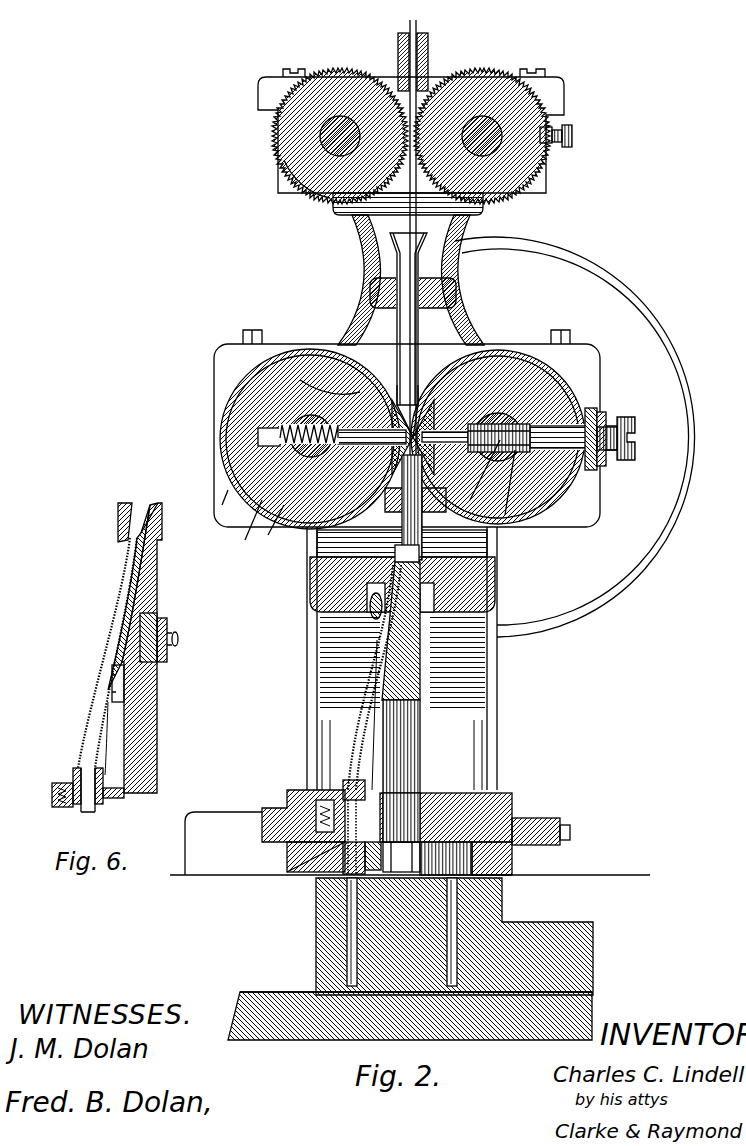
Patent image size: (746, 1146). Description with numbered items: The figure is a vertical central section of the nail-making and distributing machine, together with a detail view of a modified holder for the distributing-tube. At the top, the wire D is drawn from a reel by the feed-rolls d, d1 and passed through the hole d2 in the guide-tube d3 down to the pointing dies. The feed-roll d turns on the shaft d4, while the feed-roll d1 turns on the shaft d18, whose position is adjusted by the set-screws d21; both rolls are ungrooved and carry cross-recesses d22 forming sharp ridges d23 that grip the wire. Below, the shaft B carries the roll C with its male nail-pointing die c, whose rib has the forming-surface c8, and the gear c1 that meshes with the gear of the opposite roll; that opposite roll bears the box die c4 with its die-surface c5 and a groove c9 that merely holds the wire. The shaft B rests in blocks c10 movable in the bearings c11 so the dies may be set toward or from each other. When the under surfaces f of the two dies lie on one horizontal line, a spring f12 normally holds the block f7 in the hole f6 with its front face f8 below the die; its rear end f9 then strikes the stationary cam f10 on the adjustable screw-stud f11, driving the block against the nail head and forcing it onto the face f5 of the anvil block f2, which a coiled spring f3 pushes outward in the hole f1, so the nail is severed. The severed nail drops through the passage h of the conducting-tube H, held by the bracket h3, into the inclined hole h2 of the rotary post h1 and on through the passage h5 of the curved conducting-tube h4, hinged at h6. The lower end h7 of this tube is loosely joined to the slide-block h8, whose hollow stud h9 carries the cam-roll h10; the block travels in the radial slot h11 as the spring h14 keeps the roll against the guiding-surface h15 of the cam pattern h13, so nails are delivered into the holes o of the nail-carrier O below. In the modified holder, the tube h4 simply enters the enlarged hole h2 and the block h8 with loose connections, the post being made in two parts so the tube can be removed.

In FIG. 2, the feed-roll d is at (347, 70).
In FIG. 2, the feed-roll d1 is at (488, 78).
In FIG. 2, the hole d2 is at (418, 262).
In FIG. 2, the guide-tube d3 is at (440, 292).
In FIG. 2, the shaft d4 is at (322, 134).
In FIG. 2, the shaft d18 is at (550, 133).
In FIG. 2, the set-screws d21 is at (575, 140).
In FIG. 2, the cross-recesses d22 is at (280, 170).
In FIG. 2, the sharp ridges d23 is at (338, 70).
In FIG. 2, the wire D is at (418, 232).
In FIG. 2, the roll C is at (500, 345).
In FIG. 2, the nail-pointing die c is at (425, 395).
In FIG. 2, the gear c1 is at (220, 512).
In FIG. 2, the nail-pointing die c4 is at (392, 395).
In FIG. 2, the die-surface c5 is at (258, 434).
In FIG. 2, the forming-surface c8 is at (322, 453).
In FIG. 2, the groove c9 is at (305, 385).
In FIG. 2, the blocks c10 is at (245, 527).
In FIG. 2, the bearings c11 is at (522, 483).
In FIG. 2, the tube lower end e is at (425, 372).
In FIG. 2, the under surface f is at (390, 388).
In FIG. 2, the hole f1 is at (269, 524).
In FIG. 2, the movable anvil block f2 is at (318, 385).
In FIG. 2, the coiled spring f3 is at (318, 548).
In FIG. 2, the face f5 is at (290, 440).
In FIG. 2, the hole f6 is at (590, 462).
In FIG. 2, the movable block f7 is at (604, 462).
In FIG. 2, the front face f8 is at (479, 457).
In FIG. 2, the rear end f9 is at (600, 428).
In FIG. 2, the stationary cam f10 is at (636, 424).
In FIG. 2, the screw-stud f11 is at (635, 445).
In FIG. 2, the spring f12 is at (510, 500).
In FIG. 2, the shaft B is at (545, 490).
In FIG. 2, the conducting-tube H is at (420, 518).
In FIG. 2, the passage h is at (318, 580).
In FIG. 2, the rotary post h1 is at (418, 718).
In FIG. 6, the rotary post h1 is at (150, 686).
In FIG. 2, the inclined hole h2 is at (408, 590).
In FIG. 6, the inclined hole h2 is at (143, 522).
In FIG. 2, the bracket h3 is at (318, 553).
In FIG. 2, the curved conducting-tube h4 is at (352, 733).
In FIG. 6, the curved conducting-tube h4 is at (93, 688).
In FIG. 2, the passage h5 is at (360, 672).
In FIG. 6, the passage h5 is at (113, 623).
In FIG. 2, the hinge h6 is at (370, 610).
In FIG. 2, the lower end of tube h7 is at (350, 784).
In FIG. 6, the lower end of tube h7 is at (85, 774).
In FIG. 2, the slide-block h8 is at (318, 805).
In FIG. 6, the slide-block h8 is at (55, 800).
In FIG. 2, the hollow stud h9 is at (350, 864).
In FIG. 2, the cam-roll h10 is at (330, 860).
In FIG. 2, the radial slot h11 is at (300, 840).
In FIG. 2, the cam pattern h13 is at (500, 874).
In FIG. 2, the spring h14 is at (378, 760).
In FIG. 6, the spring h14 is at (108, 744).
In FIG. 2, the guiding-surface h15 is at (512, 850).
In FIG. 2, the nail-carrier O is at (322, 900).
In FIG. 2, the holes o is at (348, 930).